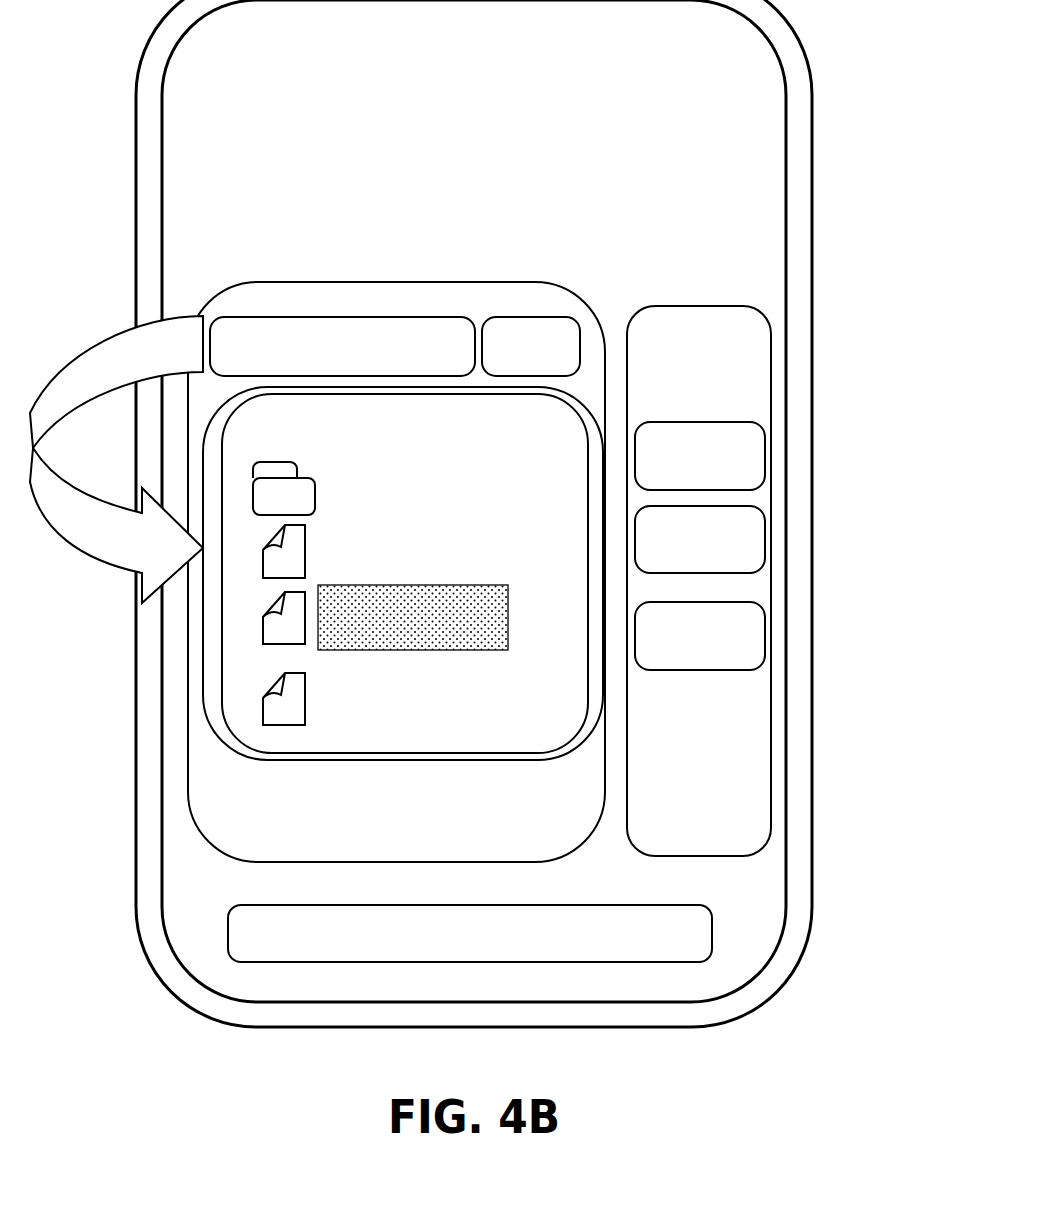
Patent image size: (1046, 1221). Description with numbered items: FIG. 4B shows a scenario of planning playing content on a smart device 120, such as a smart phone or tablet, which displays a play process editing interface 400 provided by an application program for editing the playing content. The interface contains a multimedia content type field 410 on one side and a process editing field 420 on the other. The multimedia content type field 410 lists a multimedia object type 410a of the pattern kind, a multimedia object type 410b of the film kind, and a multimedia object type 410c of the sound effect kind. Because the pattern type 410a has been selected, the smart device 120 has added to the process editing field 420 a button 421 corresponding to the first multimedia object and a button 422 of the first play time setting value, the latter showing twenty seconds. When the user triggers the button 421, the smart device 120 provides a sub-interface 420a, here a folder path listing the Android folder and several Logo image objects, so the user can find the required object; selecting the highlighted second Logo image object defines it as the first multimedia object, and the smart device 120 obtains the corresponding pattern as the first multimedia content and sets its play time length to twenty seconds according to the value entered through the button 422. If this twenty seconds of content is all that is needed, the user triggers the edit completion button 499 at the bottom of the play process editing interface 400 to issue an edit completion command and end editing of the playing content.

The smart device 120 is at (812, 818).
The play process editing interface 400 is at (247, 168).
The process editing field 420 is at (394, 282).
The button 421 is at (308, 317).
The button 422 is at (515, 317).
The sub-interface 420a is at (203, 650).
The multimedia content type field 410 is at (771, 737).
The multimedia object type 410a is at (765, 455).
The multimedia object type 410b is at (765, 538).
The multimedia object type 410c is at (765, 634).
The edit completion button 499 is at (228, 936).